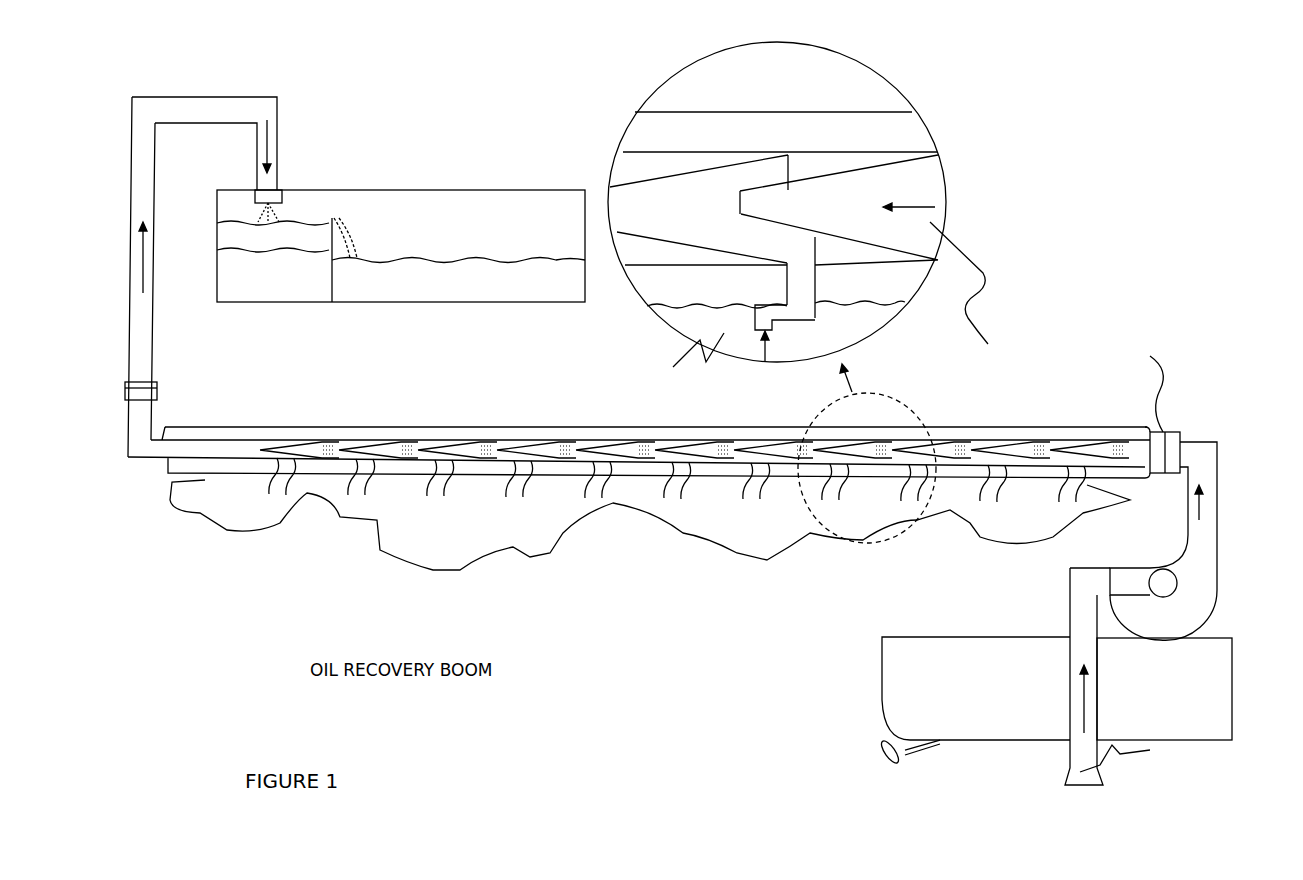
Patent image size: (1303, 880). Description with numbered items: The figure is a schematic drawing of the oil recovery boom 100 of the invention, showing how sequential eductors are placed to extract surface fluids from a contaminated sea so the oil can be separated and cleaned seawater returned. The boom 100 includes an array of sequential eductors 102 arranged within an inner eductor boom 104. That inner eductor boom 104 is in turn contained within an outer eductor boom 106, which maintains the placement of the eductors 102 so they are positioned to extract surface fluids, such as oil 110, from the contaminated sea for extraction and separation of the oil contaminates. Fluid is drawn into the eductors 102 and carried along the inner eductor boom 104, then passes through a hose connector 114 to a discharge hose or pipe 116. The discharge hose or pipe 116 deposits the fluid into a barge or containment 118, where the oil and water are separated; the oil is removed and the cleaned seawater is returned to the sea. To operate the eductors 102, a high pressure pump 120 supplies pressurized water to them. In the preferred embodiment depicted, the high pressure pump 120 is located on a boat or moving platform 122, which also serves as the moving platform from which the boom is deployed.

The oil recovery boom 100 is at (215, 83).
The sequential eductors 102 is at (930, 424).
The inner eductor boom 104 is at (248, 430).
The outer eductor boom 106 is at (466, 430).
The oil 110 is at (703, 522).
The hose connector 114 is at (148, 397).
The discharge hose or pipe 116 is at (280, 112).
The barge or containment 118 is at (407, 200).
The high pressure pump 120 is at (1148, 565).
The boat or moving platform 122 is at (882, 685).